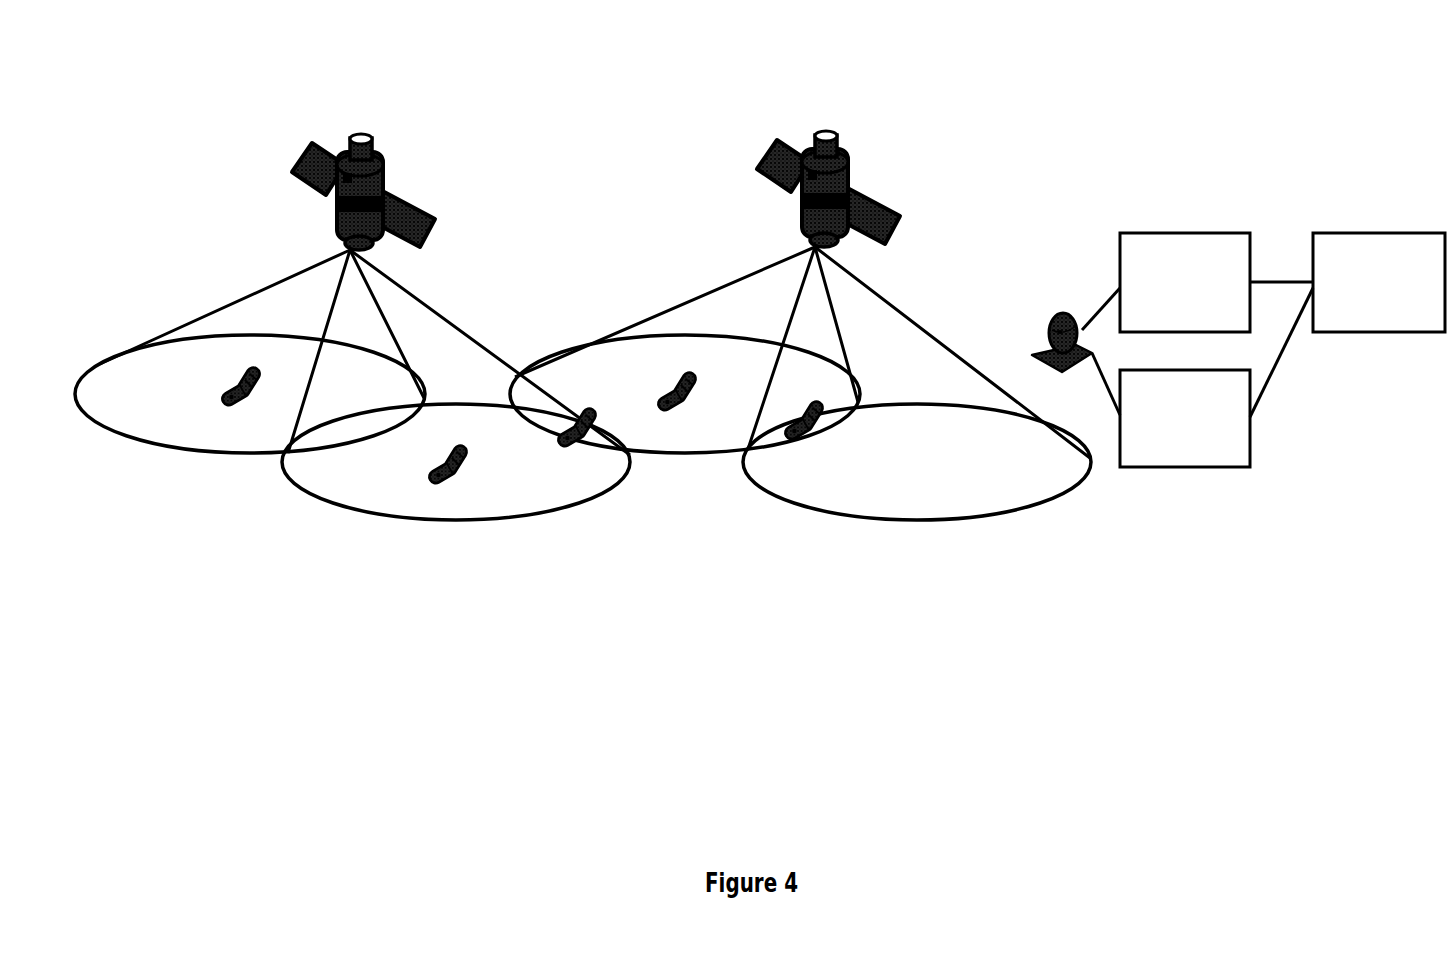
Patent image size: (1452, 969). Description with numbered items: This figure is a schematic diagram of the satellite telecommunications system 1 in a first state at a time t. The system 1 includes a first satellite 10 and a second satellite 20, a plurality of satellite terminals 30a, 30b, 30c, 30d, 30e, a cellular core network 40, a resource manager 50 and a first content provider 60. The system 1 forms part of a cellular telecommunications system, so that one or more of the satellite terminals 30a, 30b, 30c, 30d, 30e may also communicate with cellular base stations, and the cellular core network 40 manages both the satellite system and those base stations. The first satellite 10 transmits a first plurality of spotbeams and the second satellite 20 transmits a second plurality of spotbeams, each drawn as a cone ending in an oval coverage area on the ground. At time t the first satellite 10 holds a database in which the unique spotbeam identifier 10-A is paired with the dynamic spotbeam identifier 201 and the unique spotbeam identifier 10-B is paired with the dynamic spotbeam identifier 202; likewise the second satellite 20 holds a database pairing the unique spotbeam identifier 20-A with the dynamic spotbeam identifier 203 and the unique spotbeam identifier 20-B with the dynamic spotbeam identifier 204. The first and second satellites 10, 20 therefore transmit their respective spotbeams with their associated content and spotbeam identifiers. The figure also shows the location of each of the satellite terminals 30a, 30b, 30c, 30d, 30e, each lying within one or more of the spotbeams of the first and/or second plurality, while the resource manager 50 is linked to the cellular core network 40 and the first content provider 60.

The satellite telecommunications system 1 is at (242, 51).
The first satellite 10 is at (311, 143).
The second satellite 20 is at (776, 143).
The unique spotbeam identifier of first spotbeam of first satellite 10-A is at (155, 388).
The unique spotbeam identifier of second spotbeam of first satellite 10-B is at (393, 467).
The unique spotbeam identifier of first spotbeam of second satellite 20-A is at (633, 375).
The unique spotbeam identifier of second spotbeam of second satellite 20-B is at (920, 451).
The dynamic spotbeam identifier 201 is at (153, 418).
The dynamic spotbeam identifier 202 is at (390, 497).
The dynamic spotbeam identifier 203 is at (632, 405).
The dynamic spotbeam identifier 204 is at (918, 481).
The satellite terminal 30a is at (233, 410).
The satellite terminal 30b is at (452, 488).
The satellite terminal 30c is at (581, 445).
The satellite terminal 30d is at (676, 412).
The satellite terminal 30e is at (797, 442).
The cellular core network 40 is at (1185, 467).
The resource manager 50 is at (1185, 233).
The first content provider 60 is at (1390, 233).